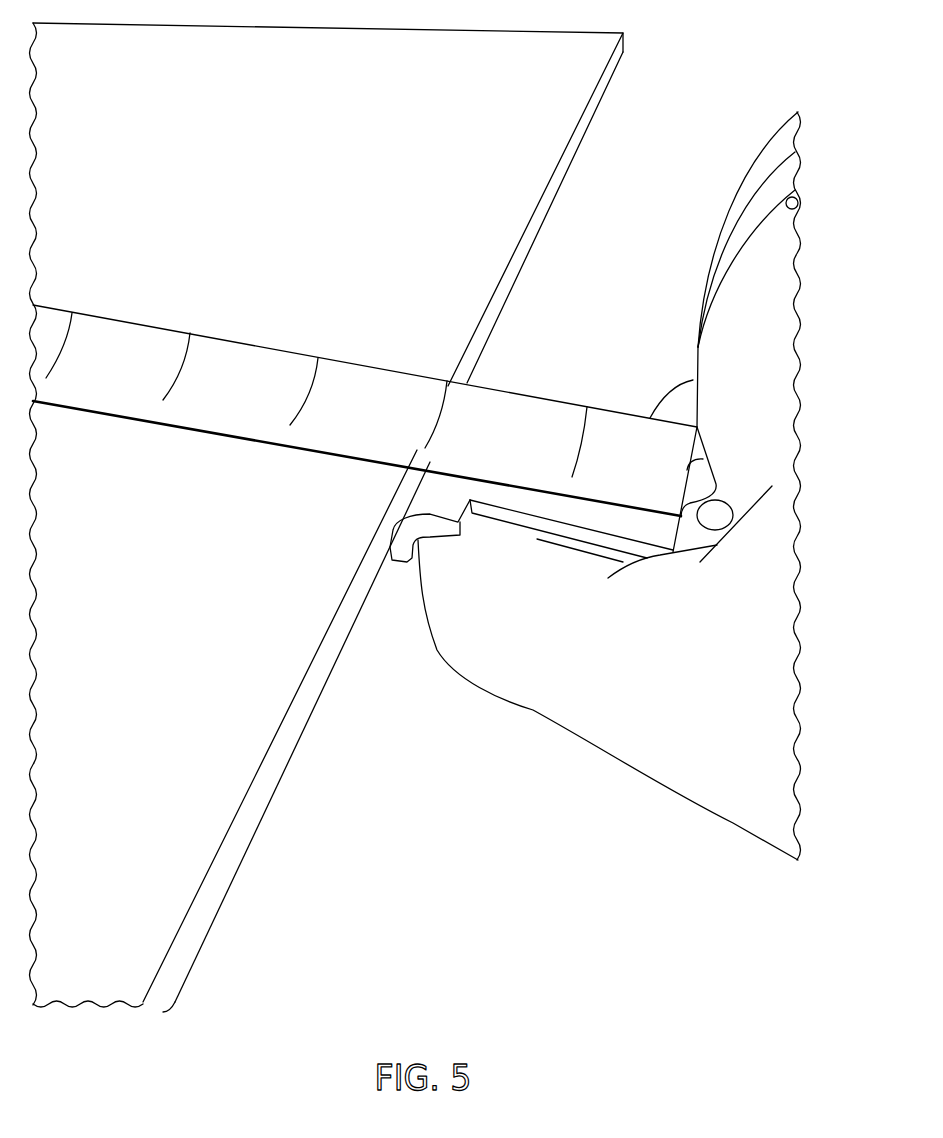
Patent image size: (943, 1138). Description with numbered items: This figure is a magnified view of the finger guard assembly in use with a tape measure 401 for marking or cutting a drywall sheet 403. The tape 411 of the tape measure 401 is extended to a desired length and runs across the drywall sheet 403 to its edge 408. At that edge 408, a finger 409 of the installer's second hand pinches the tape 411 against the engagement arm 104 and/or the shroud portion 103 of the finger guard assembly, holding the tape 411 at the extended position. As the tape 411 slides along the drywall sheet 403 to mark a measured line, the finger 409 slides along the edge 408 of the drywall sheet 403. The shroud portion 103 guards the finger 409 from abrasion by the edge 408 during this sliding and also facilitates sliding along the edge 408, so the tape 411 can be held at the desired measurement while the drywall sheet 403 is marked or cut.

The shroud portion 103 is at (427, 503).
The engagement arm 104 is at (525, 502).
The tape measure 401 is at (728, 357).
The drywall sheet 403 is at (455, 203).
The edge 408 is at (312, 697).
The finger 409 is at (453, 589).
The tape 411 is at (97, 342).